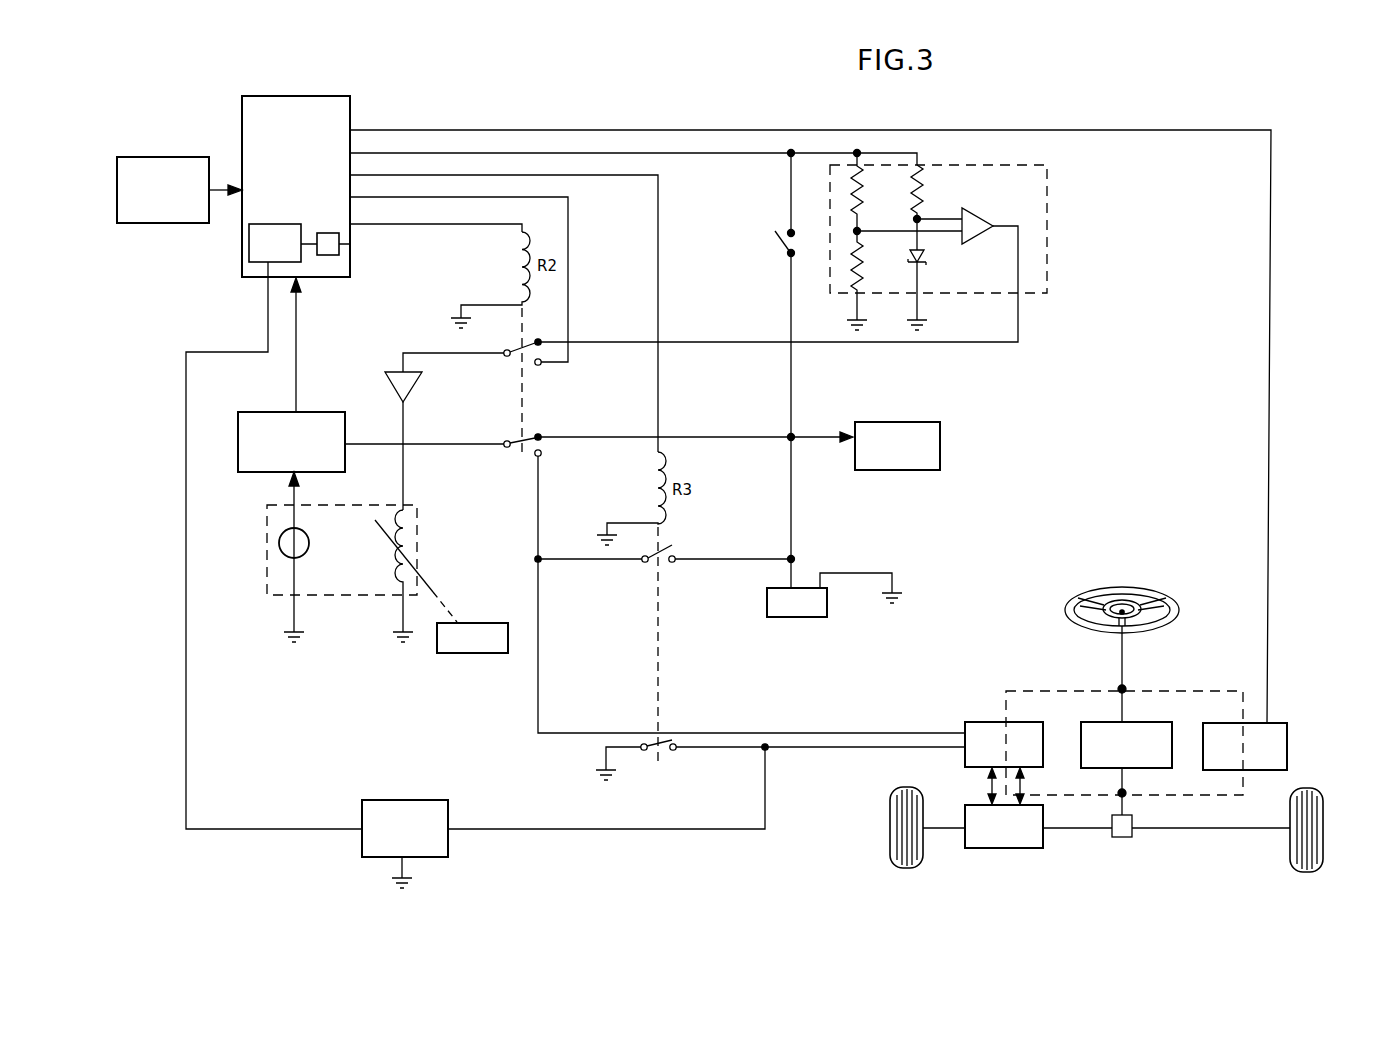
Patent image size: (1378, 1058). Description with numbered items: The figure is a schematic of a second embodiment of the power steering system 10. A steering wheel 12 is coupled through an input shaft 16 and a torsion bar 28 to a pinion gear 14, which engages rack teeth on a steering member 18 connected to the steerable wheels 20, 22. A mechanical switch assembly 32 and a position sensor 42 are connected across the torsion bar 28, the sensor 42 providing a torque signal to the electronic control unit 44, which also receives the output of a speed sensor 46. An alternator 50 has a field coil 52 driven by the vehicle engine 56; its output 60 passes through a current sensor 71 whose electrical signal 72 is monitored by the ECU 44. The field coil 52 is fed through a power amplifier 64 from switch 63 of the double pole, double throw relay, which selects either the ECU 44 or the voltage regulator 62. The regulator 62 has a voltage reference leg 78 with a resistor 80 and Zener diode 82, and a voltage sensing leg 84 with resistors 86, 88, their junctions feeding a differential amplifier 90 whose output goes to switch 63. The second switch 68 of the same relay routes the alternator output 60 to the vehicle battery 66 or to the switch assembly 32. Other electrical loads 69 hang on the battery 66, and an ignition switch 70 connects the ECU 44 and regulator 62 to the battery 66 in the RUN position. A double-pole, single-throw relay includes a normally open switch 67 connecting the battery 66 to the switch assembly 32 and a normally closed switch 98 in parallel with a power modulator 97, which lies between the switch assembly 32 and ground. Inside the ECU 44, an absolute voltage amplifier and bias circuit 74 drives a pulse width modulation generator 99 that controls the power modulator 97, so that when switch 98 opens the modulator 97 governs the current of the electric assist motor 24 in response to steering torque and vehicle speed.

The electronic control unit 44 is at (360, 90).
The speed sensor 46 is at (158, 226).
The pulse width modulation generator 99 is at (249, 250).
The absolute voltage amplifier and bias circuit 74 is at (350, 250).
The electrical signal 72 is at (298, 388).
The current sensor 71 is at (262, 412).
The output 60 is at (294, 499).
The alternator 50 is at (252, 586).
The field coil 52 is at (408, 540).
The vehicle engine 56 is at (484, 623).
The power amplifier 64 is at (414, 384).
The switch 63 is at (537, 375).
The second switch 68 is at (511, 470).
The normally open switch 67 is at (680, 577).
The normally closed switch 98 is at (668, 768).
The power modulator 97 is at (380, 800).
The ignition switch 70 is at (781, 266).
The voltage regulator 62 is at (1062, 160).
The voltage sensing leg 84 is at (840, 157).
The voltage reference leg 78 is at (931, 160).
The resistor 86 is at (860, 198).
The resistor 80 is at (922, 196).
The resistor 88 is at (860, 275).
The Zener diode 82 is at (924, 258).
The differential amplifier 90 is at (973, 236).
The other electrical loads 69 is at (940, 458).
The vehicle battery 66 is at (805, 617).
The steering wheel 12 is at (1180, 604).
The input shaft 16 is at (1124, 663).
The mechanical switch assembly 32 is at (985, 708).
The torsion bar 28 is at (1138, 722).
The position sensor 42 is at (1288, 723).
The electric assist motor 24 is at (990, 850).
The pinion gear 14 is at (1122, 838).
The steering member 18 is at (1205, 830).
The steerable wheel 20 is at (894, 850).
The steerable wheel 22 is at (1322, 856).
The power steering system 10 is at (1140, 489).